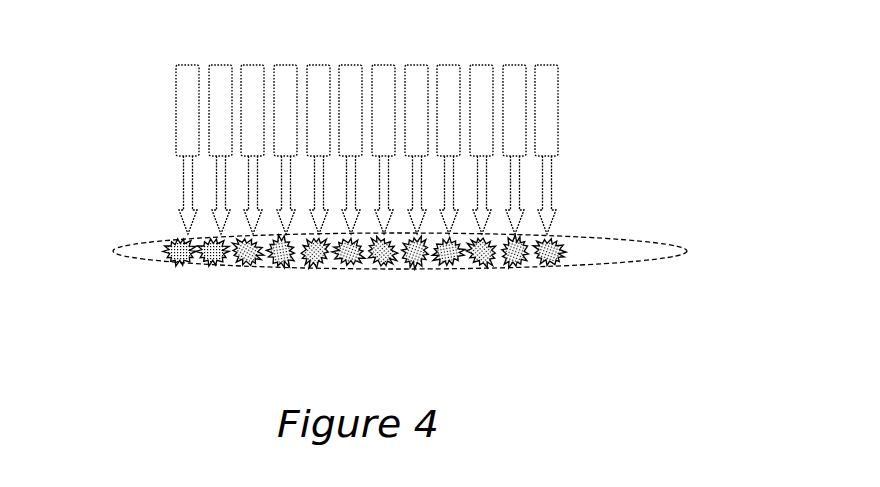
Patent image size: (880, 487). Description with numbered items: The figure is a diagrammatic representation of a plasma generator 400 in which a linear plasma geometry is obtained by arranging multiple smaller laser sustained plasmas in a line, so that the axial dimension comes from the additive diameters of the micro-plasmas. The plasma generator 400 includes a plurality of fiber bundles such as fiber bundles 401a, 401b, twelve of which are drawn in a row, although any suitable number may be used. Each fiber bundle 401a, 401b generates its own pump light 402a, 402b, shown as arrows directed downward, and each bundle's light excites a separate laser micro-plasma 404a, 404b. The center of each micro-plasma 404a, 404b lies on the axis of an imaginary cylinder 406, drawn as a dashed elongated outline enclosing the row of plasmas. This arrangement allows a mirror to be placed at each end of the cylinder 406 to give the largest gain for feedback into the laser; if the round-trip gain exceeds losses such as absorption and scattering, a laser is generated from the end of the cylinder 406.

The plasma generator 400 is at (712, 106).
The fiber bundle 401a is at (182, 117).
The fiber bundle 401b is at (223, 95).
The pump light 402a is at (183, 180).
The pump light 402b is at (217, 197).
The laser micro-plasma 404a is at (168, 245).
The laser micro-plasma 404b is at (213, 263).
The cylinder 406 is at (142, 259).